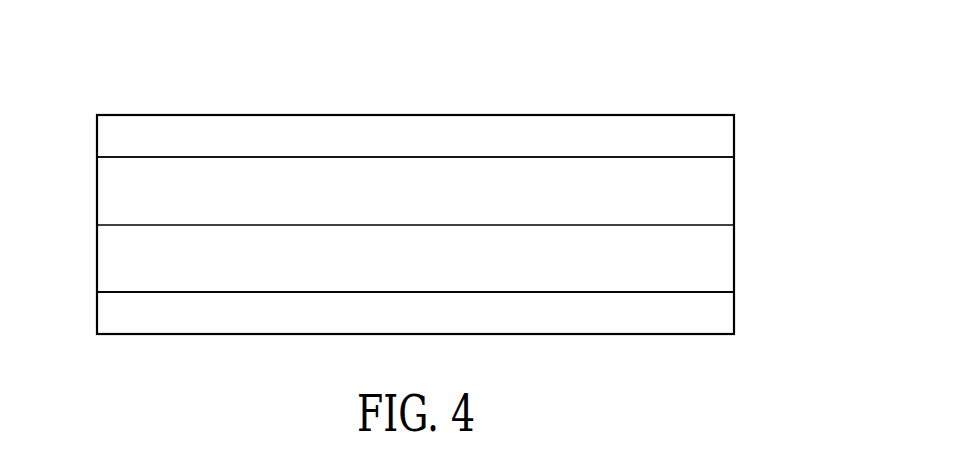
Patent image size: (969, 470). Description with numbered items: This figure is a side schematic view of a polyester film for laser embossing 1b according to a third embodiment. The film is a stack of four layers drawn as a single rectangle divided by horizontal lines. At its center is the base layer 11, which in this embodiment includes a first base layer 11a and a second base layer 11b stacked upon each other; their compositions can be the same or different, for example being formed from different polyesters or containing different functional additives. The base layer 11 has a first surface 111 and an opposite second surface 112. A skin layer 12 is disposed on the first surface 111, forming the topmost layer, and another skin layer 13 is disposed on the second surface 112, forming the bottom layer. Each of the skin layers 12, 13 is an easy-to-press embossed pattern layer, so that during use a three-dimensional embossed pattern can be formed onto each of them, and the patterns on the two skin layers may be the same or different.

The display device 1b is at (131, 47).
The base layer 11 is at (832, 170).
The first base layer 11a is at (727, 197).
The second base layer 11b is at (727, 253).
The first surface 111 is at (128, 157).
The second surface 112 is at (118, 291).
The skin layer 12 is at (727, 136).
The another skin layer 13 is at (727, 306).